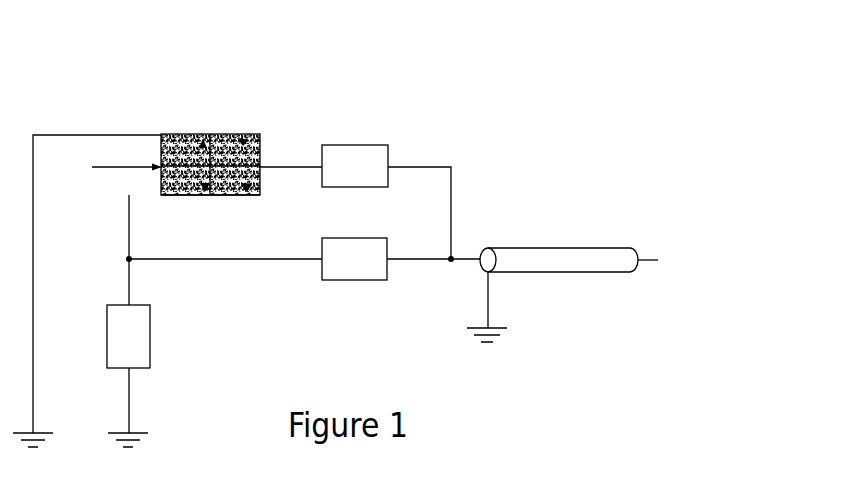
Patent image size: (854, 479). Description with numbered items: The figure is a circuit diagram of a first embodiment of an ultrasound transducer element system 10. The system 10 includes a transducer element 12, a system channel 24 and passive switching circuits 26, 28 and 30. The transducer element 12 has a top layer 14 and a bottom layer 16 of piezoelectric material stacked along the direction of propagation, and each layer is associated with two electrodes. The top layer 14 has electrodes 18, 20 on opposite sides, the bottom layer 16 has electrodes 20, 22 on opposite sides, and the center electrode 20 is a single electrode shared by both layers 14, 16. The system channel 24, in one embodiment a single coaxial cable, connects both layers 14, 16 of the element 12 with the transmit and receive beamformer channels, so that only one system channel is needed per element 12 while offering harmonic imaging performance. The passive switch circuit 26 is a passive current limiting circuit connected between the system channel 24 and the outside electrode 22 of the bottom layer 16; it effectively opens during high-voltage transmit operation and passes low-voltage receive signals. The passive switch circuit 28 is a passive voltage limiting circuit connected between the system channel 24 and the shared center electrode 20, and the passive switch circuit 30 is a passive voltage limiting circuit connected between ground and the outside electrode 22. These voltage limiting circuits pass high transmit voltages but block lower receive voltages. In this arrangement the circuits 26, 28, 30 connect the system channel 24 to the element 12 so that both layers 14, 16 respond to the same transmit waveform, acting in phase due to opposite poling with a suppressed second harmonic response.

The ultrasound transducer element system 10 is at (426, 96).
The transducer element 12 is at (201, 128).
The top layer 14 is at (250, 132).
The bottom layer 16 is at (257, 193).
The outer electrode 18 is at (173, 128).
The center electrode 20 is at (107, 172).
The outside electrode 22 is at (192, 211).
The system channel 24 is at (556, 229).
The passive switch circuit 26 is at (321, 299).
The passive switch circuit 28 is at (400, 145).
The passive switch circuit 30 is at (154, 372).